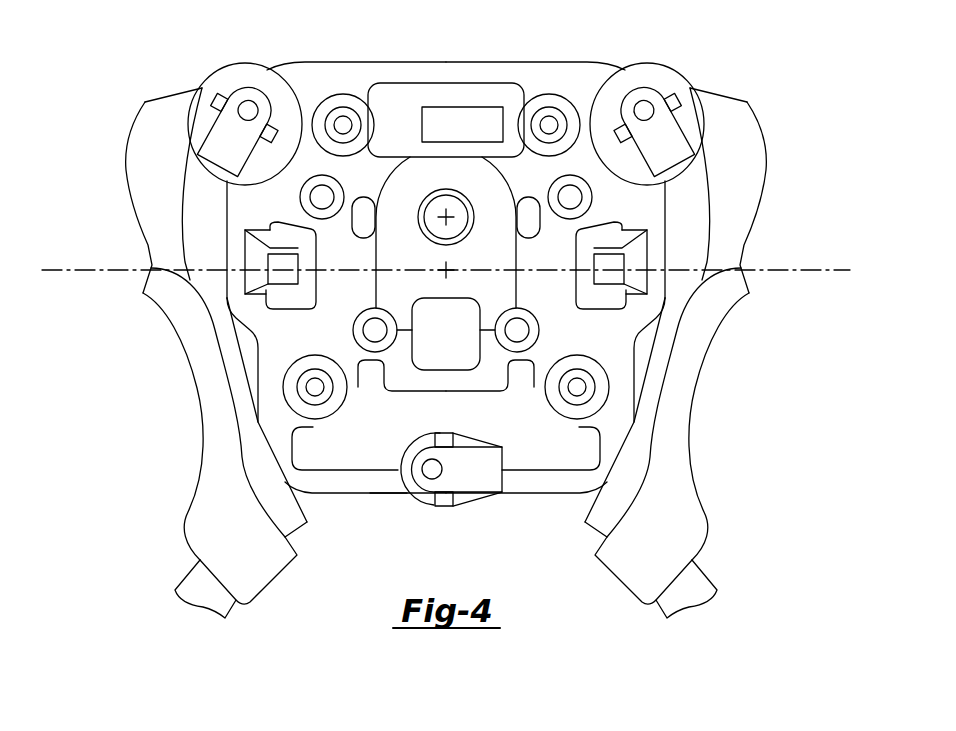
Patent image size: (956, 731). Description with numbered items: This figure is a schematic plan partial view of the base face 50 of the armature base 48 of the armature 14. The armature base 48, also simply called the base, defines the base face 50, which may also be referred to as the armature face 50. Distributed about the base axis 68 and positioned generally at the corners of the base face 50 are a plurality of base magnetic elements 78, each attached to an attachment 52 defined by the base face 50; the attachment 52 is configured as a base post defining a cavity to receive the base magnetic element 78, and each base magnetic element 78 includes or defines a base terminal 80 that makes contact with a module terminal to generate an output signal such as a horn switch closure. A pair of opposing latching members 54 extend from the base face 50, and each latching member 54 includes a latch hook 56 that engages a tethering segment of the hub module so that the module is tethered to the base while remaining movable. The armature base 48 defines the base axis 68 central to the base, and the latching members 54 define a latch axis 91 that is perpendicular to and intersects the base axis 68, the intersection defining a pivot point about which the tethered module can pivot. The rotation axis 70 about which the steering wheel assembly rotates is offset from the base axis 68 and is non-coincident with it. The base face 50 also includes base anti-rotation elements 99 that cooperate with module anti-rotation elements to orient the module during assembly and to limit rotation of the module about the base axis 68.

The armature 14 is at (790, 110).
The armature base 48 is at (533, 508).
The base face 50 is at (440, 62).
The attachment 52 is at (343, 94).
The latching member 54 is at (258, 252).
The latch hook 56 is at (298, 277).
The base axis 68 is at (450, 271).
The rotation axis 70 is at (444, 218).
The base magnetic element 78 is at (330, 134).
The base terminal 80 is at (350, 124).
The latch axis 91 is at (83, 270).
The base anti-rotation element 99 is at (247, 85).